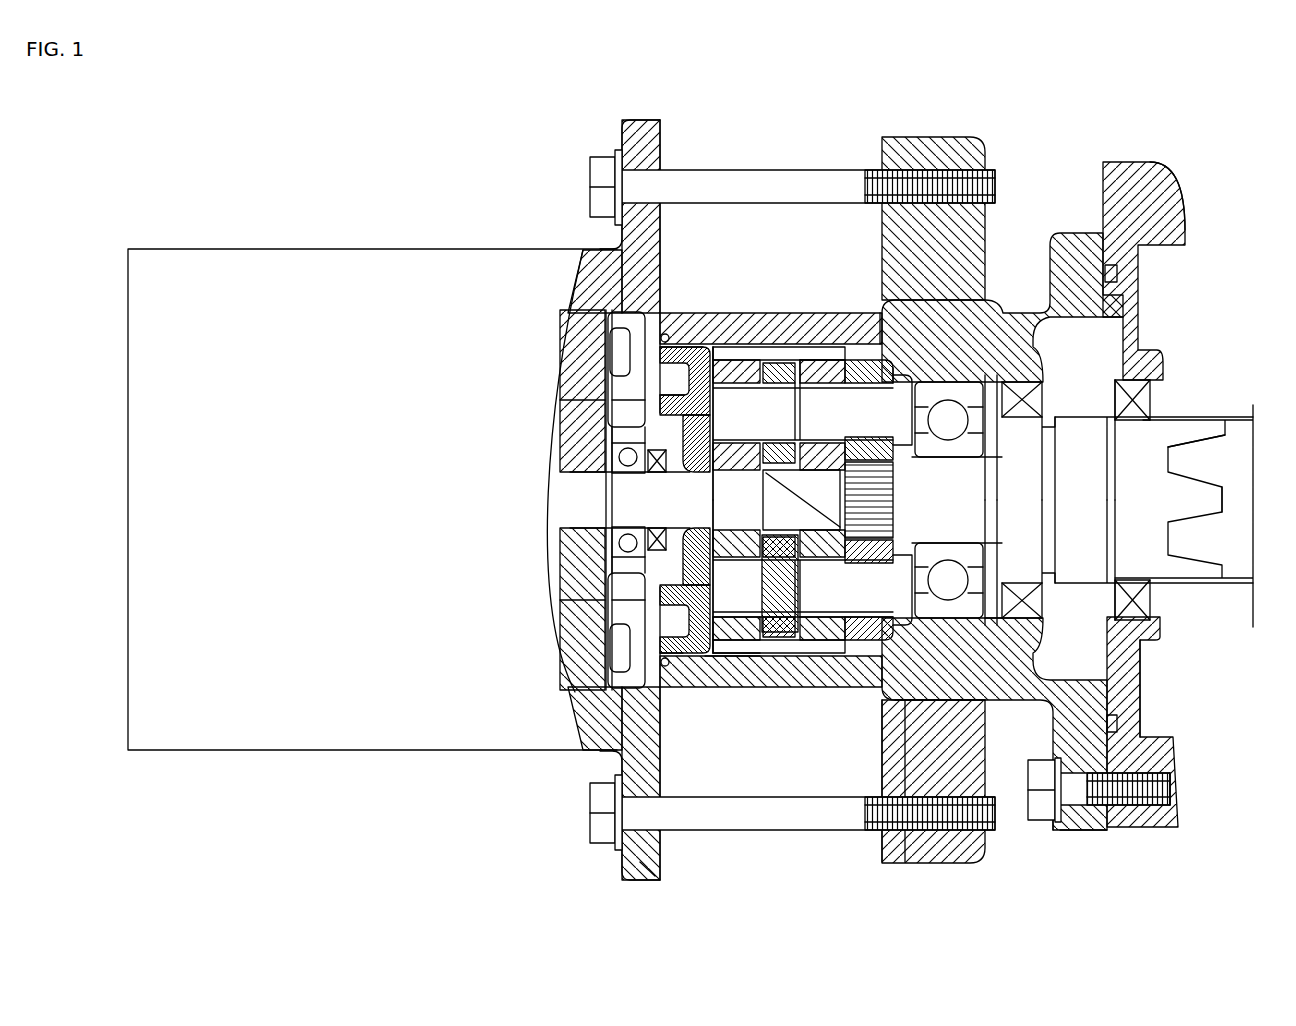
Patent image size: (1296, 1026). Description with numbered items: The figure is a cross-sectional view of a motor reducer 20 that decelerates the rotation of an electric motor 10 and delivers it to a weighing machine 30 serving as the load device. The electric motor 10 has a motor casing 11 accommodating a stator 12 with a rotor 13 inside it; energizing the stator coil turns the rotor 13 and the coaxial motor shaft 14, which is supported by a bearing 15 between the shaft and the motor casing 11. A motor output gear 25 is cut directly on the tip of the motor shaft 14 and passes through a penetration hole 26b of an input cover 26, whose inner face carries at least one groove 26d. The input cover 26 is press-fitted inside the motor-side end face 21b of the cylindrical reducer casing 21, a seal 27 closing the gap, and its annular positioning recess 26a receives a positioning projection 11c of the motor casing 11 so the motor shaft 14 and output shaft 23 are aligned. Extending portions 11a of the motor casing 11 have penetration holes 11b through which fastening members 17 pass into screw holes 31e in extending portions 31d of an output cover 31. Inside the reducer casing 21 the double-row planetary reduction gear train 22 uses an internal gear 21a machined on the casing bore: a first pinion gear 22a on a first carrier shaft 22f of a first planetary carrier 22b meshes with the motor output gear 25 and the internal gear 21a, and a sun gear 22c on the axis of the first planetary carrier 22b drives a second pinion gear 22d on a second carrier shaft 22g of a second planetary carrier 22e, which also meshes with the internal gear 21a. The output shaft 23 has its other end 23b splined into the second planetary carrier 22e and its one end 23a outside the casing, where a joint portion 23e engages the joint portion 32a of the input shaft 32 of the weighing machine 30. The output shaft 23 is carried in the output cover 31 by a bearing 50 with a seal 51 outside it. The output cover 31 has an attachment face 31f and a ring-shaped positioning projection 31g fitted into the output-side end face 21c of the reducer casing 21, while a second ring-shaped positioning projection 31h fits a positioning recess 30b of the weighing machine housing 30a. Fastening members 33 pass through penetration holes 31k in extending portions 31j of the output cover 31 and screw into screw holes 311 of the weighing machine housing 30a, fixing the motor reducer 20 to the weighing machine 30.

The electric motor 10 is at (420, 750).
The motor casing 11 is at (585, 745).
The extending portions 11a is at (650, 868).
The penetration hole 11b is at (655, 822).
The positioning projection 11c is at (715, 660).
The stator 12 is at (660, 490).
The rotor 13 is at (598, 465).
The motor shaft 14 is at (572, 410).
The bearing 15 is at (600, 345).
The fastening member 17 is at (735, 185).
The motor reducer 20 is at (785, 714).
The reducer casing 21 is at (780, 395).
The internal gear 21a is at (760, 645).
The motor-side end face 21b is at (684, 645).
The output-side end face 21c is at (880, 305).
The reduction gear train 22 is at (728, 344).
The first pinion gear 22a is at (777, 390).
The first planetary carrier 22b is at (865, 540).
The sun gear 22c is at (830, 655).
The second pinion gear 22d is at (838, 362).
The second planetary carrier 22e is at (940, 240).
The first carrier shaft 22f is at (800, 358).
The second carrier shaft 22g is at (915, 300).
The output shaft 23 is at (1008, 430).
The one end 23a is at (1140, 535).
The other end 23b is at (1000, 688).
The joint portion 23e is at (1192, 425).
The motor output gear 25 is at (718, 645).
The input cover 26 is at (612, 332).
The positioning recess 26a is at (690, 345).
The penetration hole 26b is at (706, 350).
The groove 26d is at (620, 498).
The seal 27 is at (690, 662).
The weighing machine 30 is at (1190, 792).
The weighing machine housing 30a is at (1165, 172).
The positioning recess 30b is at (1127, 688).
The output cover 31 is at (1075, 255).
The extending portions 31d is at (970, 848).
The screw holes 31e is at (920, 835).
The attachment face 31f is at (882, 795).
The positioning projection 31g is at (890, 705).
The positioning projection 31h is at (1118, 265).
The extending portions 31j is at (1082, 830).
The penetration hole 31k is at (1052, 815).
The screw hole 311 is at (1200, 830).
The input shaft 32 is at (1245, 418).
The nut portion 32a is at (1230, 420).
The fastening member 33 is at (1175, 790).
The bearing 50 is at (955, 400).
The seal 51 is at (1042, 395).